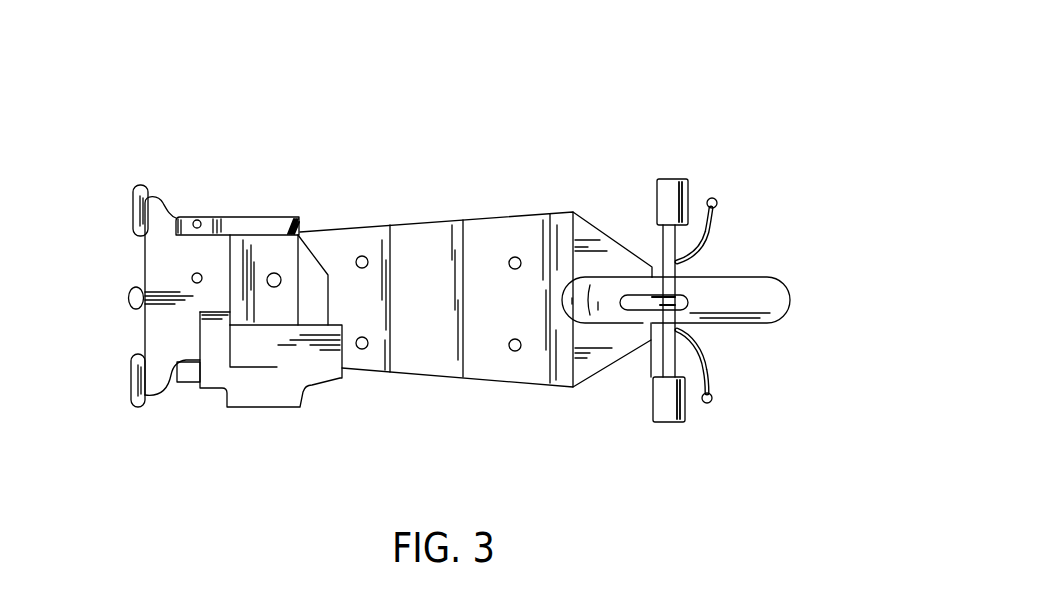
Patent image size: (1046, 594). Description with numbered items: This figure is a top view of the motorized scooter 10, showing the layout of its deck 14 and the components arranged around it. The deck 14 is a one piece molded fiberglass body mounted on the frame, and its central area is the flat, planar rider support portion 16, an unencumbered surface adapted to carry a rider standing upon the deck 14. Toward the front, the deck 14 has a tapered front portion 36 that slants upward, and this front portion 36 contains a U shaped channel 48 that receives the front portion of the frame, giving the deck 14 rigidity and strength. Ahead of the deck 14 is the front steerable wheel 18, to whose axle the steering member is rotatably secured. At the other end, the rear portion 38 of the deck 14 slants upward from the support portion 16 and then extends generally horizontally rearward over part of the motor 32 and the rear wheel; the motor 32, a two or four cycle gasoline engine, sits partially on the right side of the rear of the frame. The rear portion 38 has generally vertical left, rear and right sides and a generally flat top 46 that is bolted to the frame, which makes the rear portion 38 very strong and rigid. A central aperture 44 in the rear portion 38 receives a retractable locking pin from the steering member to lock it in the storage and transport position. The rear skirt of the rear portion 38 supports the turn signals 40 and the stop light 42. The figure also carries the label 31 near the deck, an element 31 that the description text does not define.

The scooter 10 is at (538, 145).
The deck 14 is at (399, 221).
The rider support portion 16 is at (428, 314).
The front steerable wheel 18 is at (787, 320).
The clamp bar 31 is at (242, 217).
The motor 32 is at (322, 387).
The front portion 36 is at (600, 218).
The rear portion 38 is at (290, 230).
The turn signals 40 is at (142, 186).
The stop light 42 is at (128, 300).
The central aperture 44 is at (275, 272).
The flat top 46 is at (163, 241).
The channel 48 is at (612, 307).